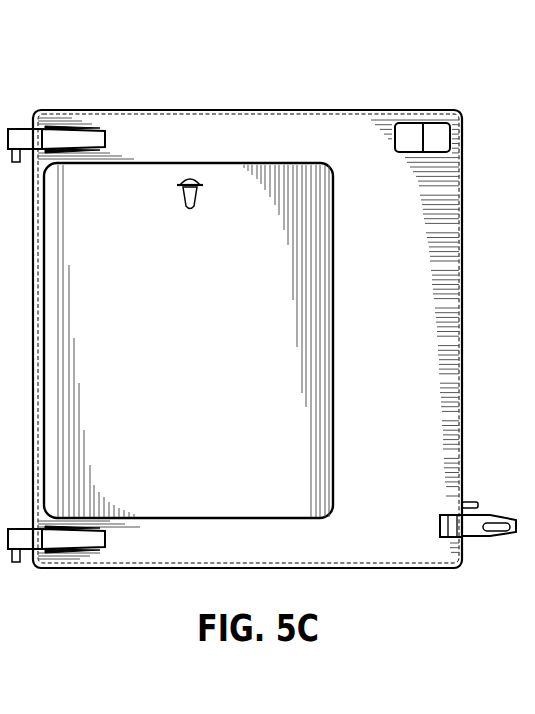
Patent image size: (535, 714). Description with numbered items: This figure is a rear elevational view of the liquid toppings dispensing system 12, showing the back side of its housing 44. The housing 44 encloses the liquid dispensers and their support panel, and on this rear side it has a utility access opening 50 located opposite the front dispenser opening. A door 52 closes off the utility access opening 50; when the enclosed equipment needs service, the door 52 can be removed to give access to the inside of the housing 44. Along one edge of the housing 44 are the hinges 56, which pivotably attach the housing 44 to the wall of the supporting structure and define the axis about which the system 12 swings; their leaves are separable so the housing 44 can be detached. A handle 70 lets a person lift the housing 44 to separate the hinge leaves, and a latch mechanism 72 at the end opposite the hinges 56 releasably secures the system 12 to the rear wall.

The liquid toppings dispensing system 12 is at (232, 70).
The housing 44 is at (398, 370).
The utility access opening 50 is at (233, 518).
The door 52 is at (208, 350).
The hinges 56 is at (106, 138).
The handle 70 is at (476, 502).
The latch mechanism 72 is at (470, 539).